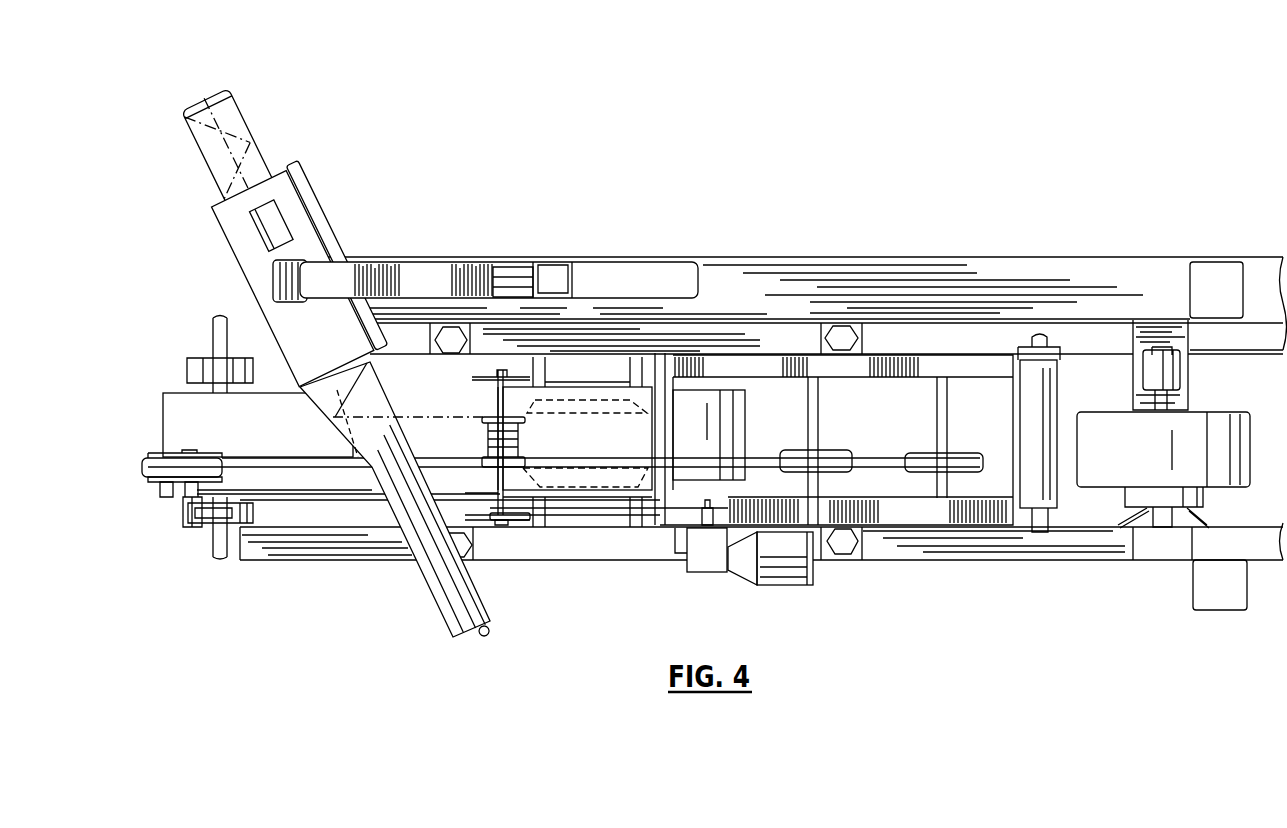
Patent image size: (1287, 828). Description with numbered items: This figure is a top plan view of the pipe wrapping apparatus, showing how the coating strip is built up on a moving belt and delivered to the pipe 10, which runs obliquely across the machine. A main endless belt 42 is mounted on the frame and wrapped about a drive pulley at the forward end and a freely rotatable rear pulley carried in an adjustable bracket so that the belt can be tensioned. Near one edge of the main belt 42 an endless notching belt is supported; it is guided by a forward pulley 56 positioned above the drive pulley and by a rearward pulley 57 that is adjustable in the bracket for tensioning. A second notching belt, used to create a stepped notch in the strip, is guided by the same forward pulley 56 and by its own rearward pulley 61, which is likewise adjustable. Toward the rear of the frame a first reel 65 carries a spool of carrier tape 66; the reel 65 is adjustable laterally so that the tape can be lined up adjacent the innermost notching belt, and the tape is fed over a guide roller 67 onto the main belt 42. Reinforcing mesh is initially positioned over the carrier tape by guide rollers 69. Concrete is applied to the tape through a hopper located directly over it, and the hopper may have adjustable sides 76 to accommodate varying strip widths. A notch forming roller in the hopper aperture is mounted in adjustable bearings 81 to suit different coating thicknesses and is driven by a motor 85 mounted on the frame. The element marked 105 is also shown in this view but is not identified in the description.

The pipe 10 is at (443, 600).
The main endless belt 42 is at (180, 408).
The forward pulley 56 is at (155, 483).
The rearward pulley 57 is at (972, 452).
The rearward pulley 61 is at (838, 448).
The first reel 65 is at (1133, 367).
The spool of carrier tape 66 is at (1220, 413).
The guide roller 67 is at (1050, 388).
The guide rollers 69 is at (670, 431).
The adjustable sides 76 is at (601, 498).
The adjustable bearings 81 is at (499, 526).
The motor 85 is at (789, 570).
The bar 105 is at (349, 272).